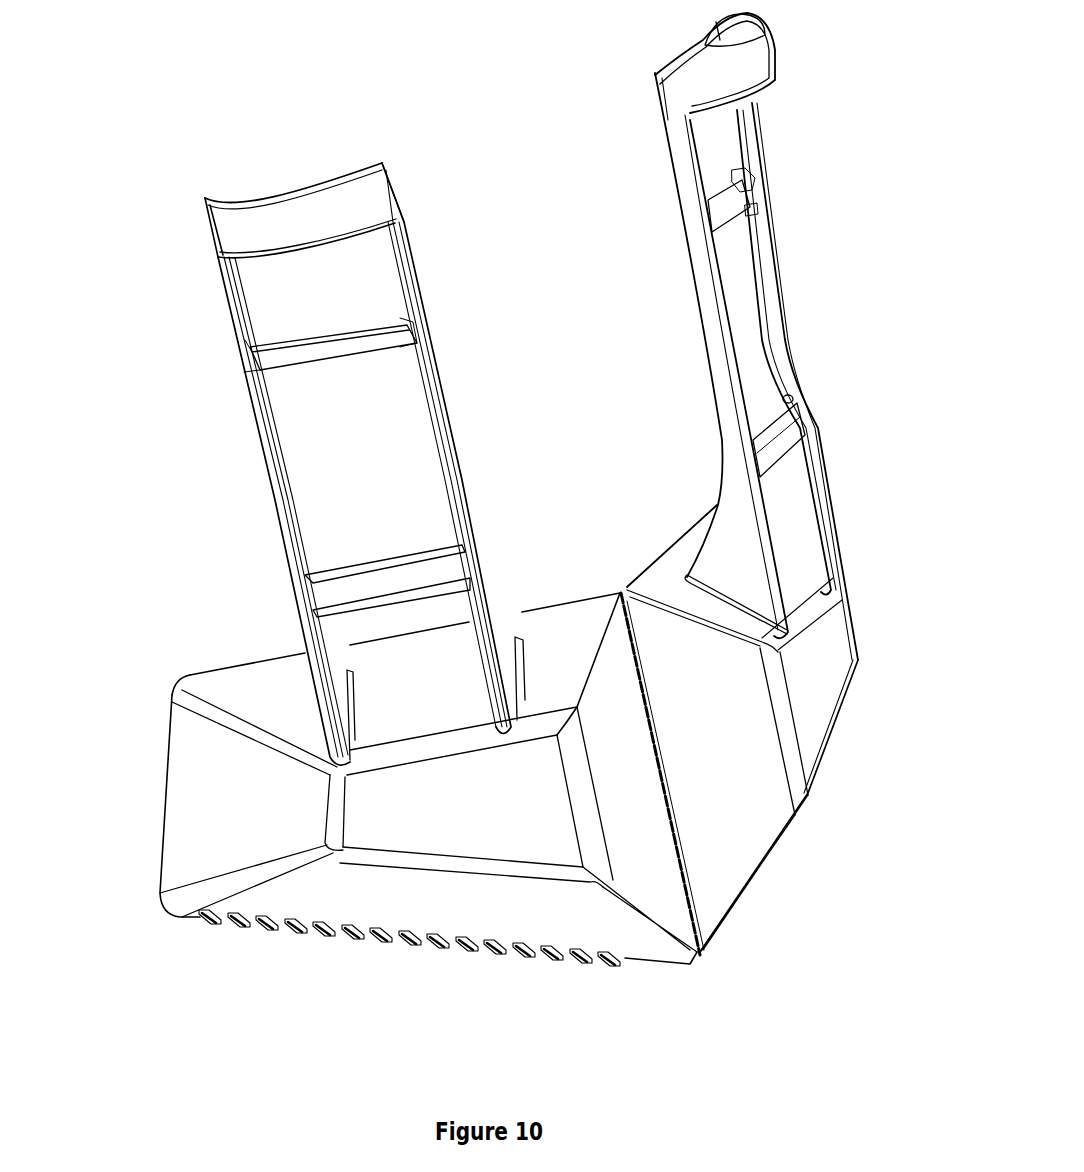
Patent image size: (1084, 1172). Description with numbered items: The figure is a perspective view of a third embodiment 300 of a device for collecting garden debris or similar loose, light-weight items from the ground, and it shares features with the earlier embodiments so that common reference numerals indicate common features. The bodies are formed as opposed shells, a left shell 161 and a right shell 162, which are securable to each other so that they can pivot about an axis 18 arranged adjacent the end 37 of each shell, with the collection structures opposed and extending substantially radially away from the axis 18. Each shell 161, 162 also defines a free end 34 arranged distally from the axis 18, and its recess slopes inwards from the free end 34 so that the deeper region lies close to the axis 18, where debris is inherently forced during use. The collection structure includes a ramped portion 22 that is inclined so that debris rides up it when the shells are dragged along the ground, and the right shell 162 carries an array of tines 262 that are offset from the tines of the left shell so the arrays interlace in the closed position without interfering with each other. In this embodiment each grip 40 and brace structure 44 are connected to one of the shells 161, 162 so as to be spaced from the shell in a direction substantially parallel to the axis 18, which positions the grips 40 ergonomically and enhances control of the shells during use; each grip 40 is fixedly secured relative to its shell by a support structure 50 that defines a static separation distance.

The third embodiment 300 is at (188, 151).
The brace structure 44 is at (243, 243).
The grip 40 is at (294, 364).
The support structure 50 is at (273, 508).
The axis 18 is at (628, 592).
The free end 34 is at (165, 782).
The left shell 161 is at (810, 722).
The right shell 162 is at (187, 850).
The tines 262 is at (320, 935).
The ramped portion 22 is at (448, 993).
The end 37 is at (658, 895).